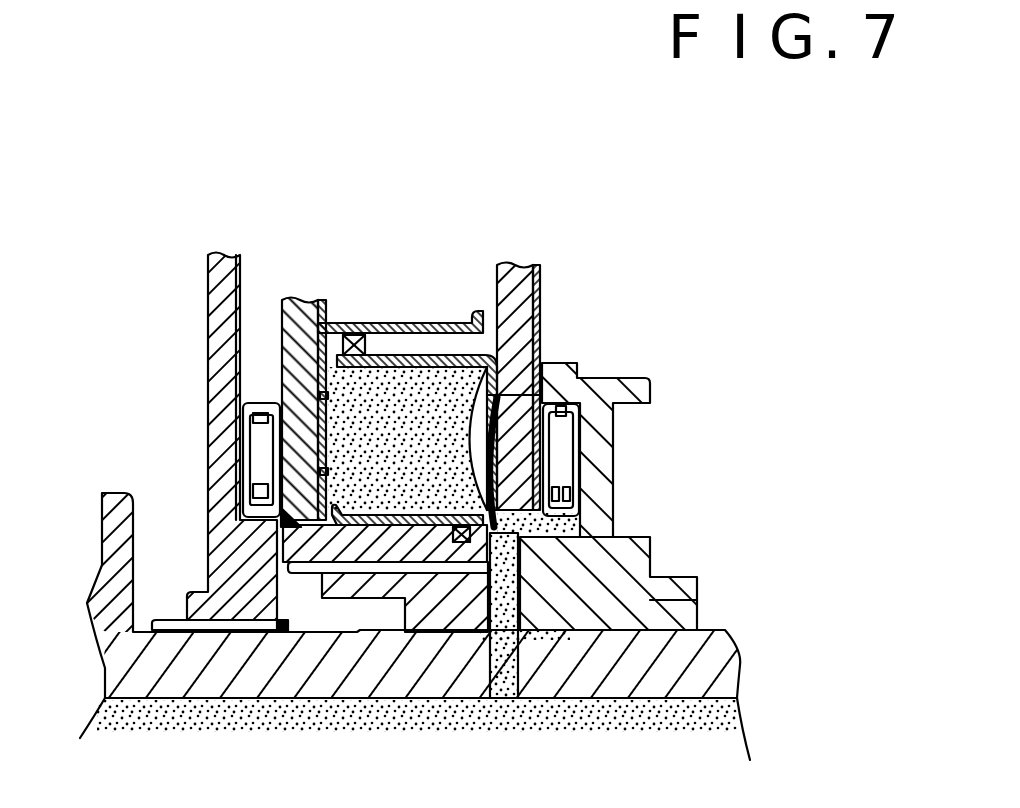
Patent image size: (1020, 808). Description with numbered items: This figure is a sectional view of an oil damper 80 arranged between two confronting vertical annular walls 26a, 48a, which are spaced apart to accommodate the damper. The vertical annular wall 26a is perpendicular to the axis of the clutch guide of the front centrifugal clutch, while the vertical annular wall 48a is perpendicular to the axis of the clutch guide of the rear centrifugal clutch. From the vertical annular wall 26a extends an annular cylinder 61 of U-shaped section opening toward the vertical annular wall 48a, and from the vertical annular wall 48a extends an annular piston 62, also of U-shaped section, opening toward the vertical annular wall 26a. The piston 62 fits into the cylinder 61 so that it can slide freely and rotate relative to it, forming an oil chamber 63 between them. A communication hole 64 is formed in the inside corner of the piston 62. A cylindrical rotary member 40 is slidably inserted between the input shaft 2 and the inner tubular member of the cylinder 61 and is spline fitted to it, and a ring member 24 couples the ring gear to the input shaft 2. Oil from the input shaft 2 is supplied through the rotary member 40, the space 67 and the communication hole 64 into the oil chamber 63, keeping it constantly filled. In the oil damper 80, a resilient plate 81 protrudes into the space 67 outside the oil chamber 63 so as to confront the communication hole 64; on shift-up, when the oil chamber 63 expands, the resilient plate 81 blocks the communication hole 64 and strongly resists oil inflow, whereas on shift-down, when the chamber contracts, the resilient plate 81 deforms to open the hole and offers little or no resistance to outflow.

The input shaft 2 is at (707, 668).
The ring member 24 is at (208, 323).
The vertical annular wall 26a is at (293, 297).
The annular cylinder 61 is at (327, 297).
The annular piston 62 is at (443, 352).
The oil chamber 63 is at (378, 238).
The oil damper 80 is at (403, 420).
The vertical annular wall 48a is at (512, 283).
The communication hole 64 is at (537, 318).
The space 67 is at (536, 520).
The resilient plate 81 is at (523, 557).
The cylindrical rotary member 40 is at (690, 578).